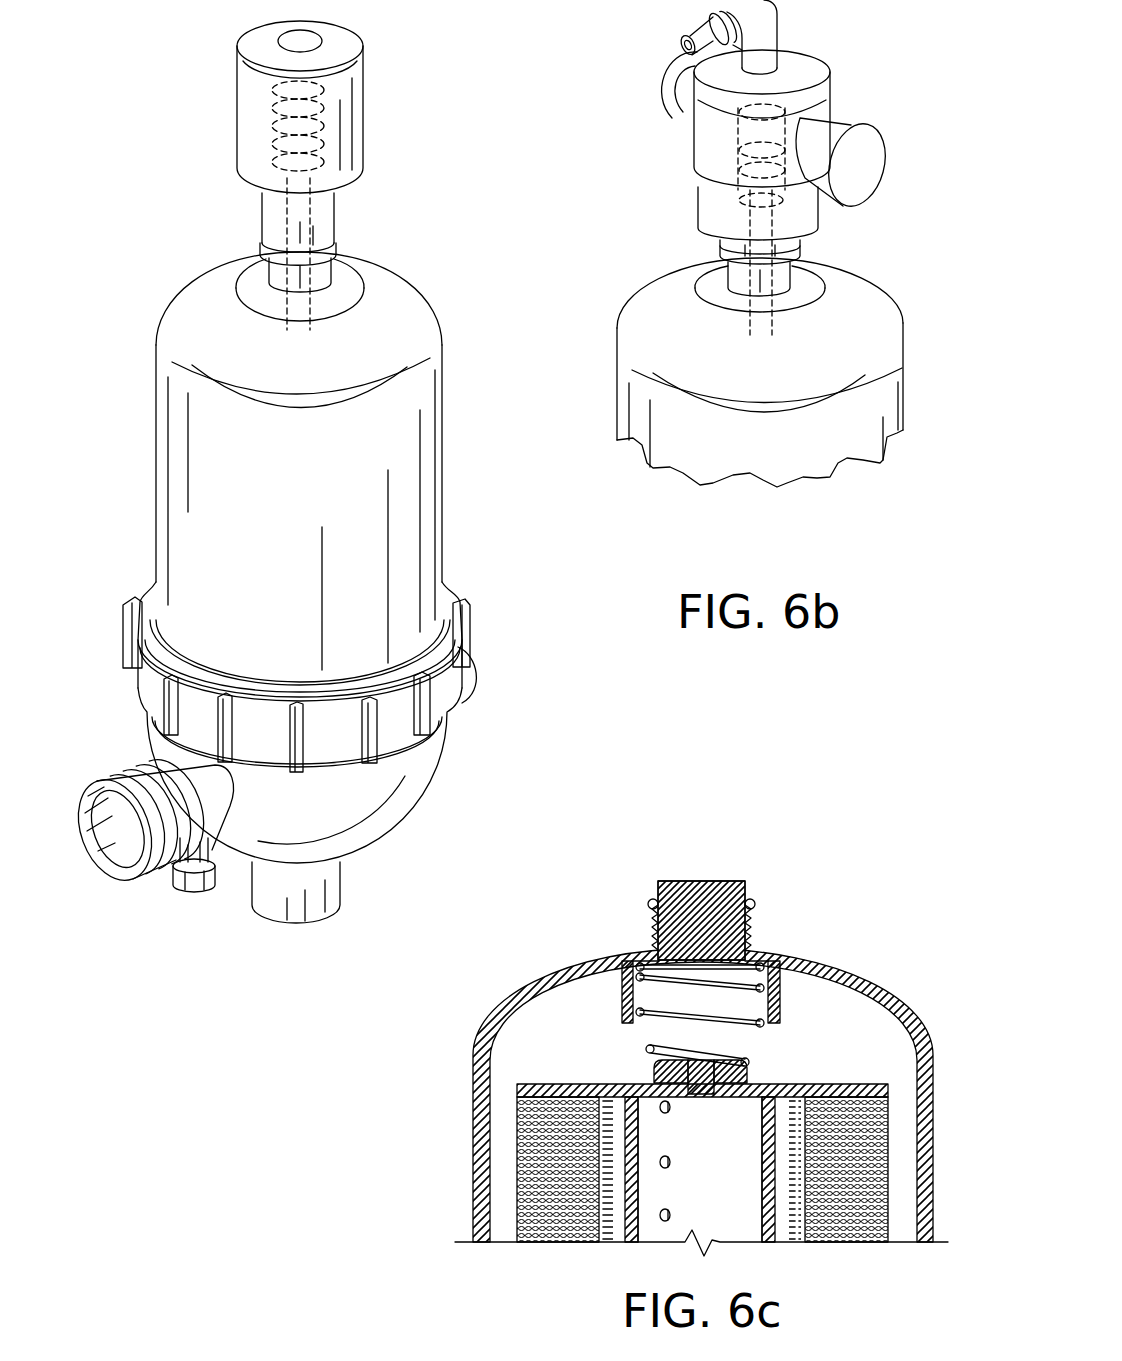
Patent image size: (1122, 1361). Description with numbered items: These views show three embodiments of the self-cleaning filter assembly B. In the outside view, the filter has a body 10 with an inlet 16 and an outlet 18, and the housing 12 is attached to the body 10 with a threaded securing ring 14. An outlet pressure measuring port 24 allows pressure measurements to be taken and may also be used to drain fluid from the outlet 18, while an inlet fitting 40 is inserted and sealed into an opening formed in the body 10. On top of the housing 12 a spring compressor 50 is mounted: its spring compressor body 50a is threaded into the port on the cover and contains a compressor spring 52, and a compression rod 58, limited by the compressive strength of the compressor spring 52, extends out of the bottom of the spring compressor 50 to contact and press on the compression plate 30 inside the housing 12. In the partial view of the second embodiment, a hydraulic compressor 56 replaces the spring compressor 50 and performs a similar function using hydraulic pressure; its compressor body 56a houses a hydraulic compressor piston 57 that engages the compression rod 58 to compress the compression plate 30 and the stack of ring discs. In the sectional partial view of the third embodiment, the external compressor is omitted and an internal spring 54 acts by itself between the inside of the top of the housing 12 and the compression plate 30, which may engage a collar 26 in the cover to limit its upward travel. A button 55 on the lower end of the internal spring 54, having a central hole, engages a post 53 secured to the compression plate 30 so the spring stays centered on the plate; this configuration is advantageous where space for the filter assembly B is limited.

In FIG. 6A, the self-cleaning filter assembly B is at (137, 502).
In FIG. 6A, the body 10 is at (393, 803).
In FIG. 6A, the housing 12 is at (180, 425).
In FIG. 6B, the housing 12 is at (877, 340).
In FIG. 6A, the threaded securing ring 14 is at (390, 727).
In FIG. 6A, the inlet 16 is at (478, 680).
In FIG. 6A, the outlet 18 is at (133, 881).
In FIG. 6A, the outlet pressure measuring port 24 is at (203, 893).
In FIG. 6C, the collar 26 is at (622, 1001).
In FIG. 6C, the compression plate 30 is at (837, 1088).
In FIG. 6A, the inlet fitting 40 is at (327, 890).
In FIG. 6A, the spring compressor 50 is at (376, 66).
In FIG. 6A, the spring compressor body 50a is at (237, 109).
In FIG. 6A, the compressor spring 52 is at (327, 127).
In FIG. 6C, the post 53 is at (655, 1072).
In FIG. 6C, the internal spring 54 is at (757, 1080).
In FIG. 6C, the button 55 is at (747, 1044).
In FIG. 6B, the hydraulic compressor 56 is at (870, 98).
In FIG. 6B, the compressor body 56a is at (812, 77).
In FIG. 6B, the hydraulic compressor piston 57 is at (697, 170).
In FIG. 6A, the compression rod 58 is at (300, 320).
In FIG. 6B, the compression rod 58 is at (823, 312).